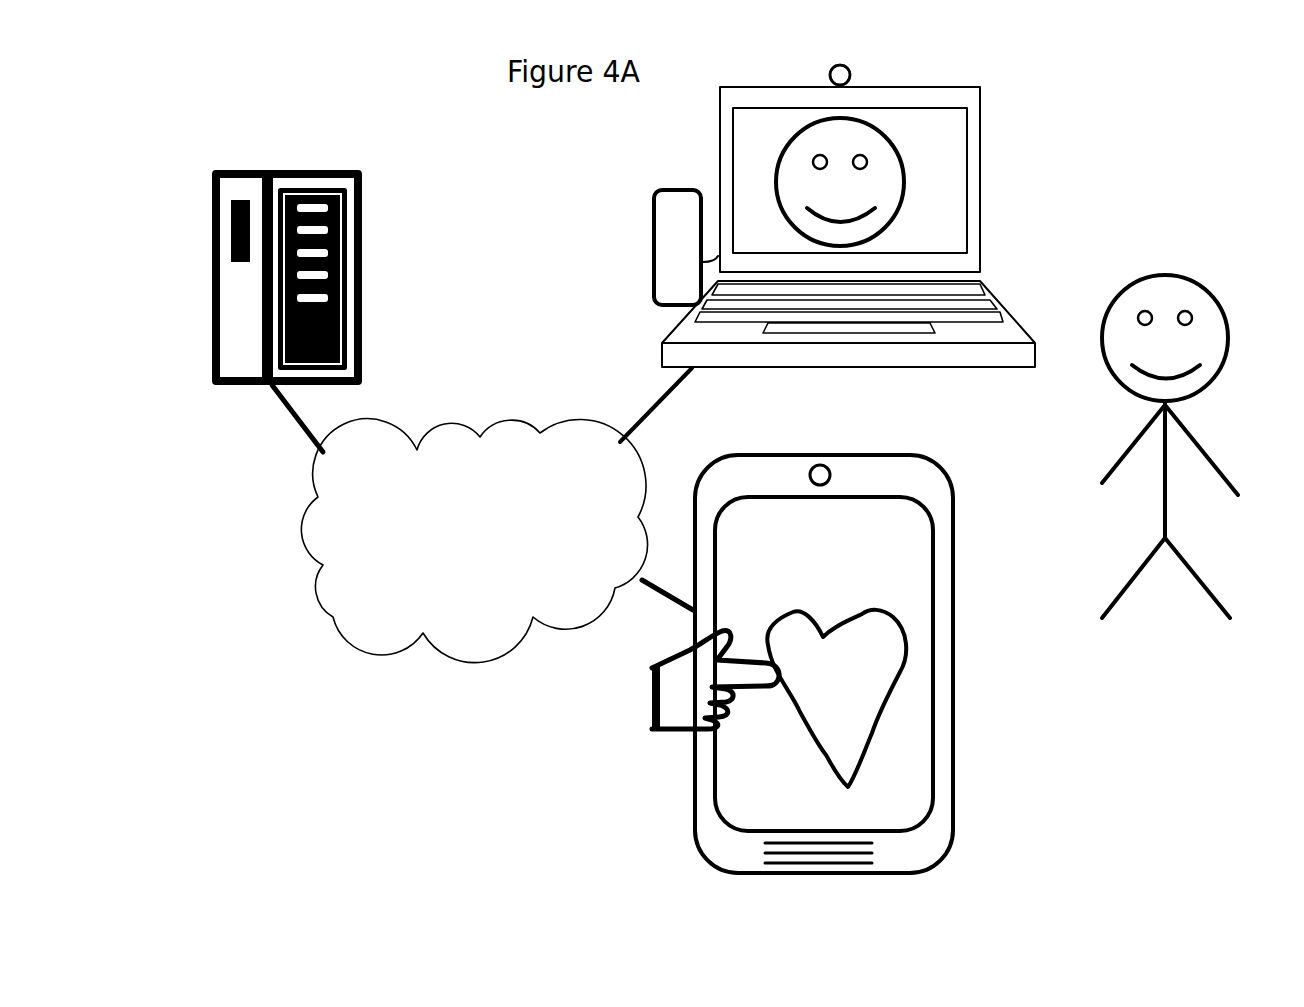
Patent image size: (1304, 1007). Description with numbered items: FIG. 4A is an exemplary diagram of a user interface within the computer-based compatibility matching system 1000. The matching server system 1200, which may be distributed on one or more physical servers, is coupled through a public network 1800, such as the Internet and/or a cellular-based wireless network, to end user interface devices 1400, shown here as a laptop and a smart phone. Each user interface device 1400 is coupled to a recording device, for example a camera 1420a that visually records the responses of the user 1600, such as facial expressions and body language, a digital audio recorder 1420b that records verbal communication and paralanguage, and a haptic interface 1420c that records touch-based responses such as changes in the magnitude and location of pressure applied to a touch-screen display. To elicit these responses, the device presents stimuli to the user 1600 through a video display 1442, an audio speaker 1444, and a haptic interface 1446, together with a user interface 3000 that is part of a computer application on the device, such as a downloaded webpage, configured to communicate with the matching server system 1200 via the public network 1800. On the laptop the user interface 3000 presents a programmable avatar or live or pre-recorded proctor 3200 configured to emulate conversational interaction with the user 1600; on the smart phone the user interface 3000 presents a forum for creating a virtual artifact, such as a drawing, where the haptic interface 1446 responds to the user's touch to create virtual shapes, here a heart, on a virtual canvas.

The computer-based compatibility matching system 1000 is at (380, 790).
The matching server system 1200 is at (300, 170).
The end user interface device 1400 is at (980, 88).
The camera 1420a is at (848, 65).
The digital audio recorder 1420b is at (883, 853).
The haptic interface 1420c is at (931, 664).
The video display 1442 is at (967, 168).
The audio speaker 1444 is at (652, 187).
The haptic interface 1446 is at (925, 705).
The user 1600 is at (1155, 273).
The public network 1800 is at (335, 620).
The user interface 3000 is at (739, 162).
The programmable avatar or live or pre-recorded proctor 3200 is at (905, 190).